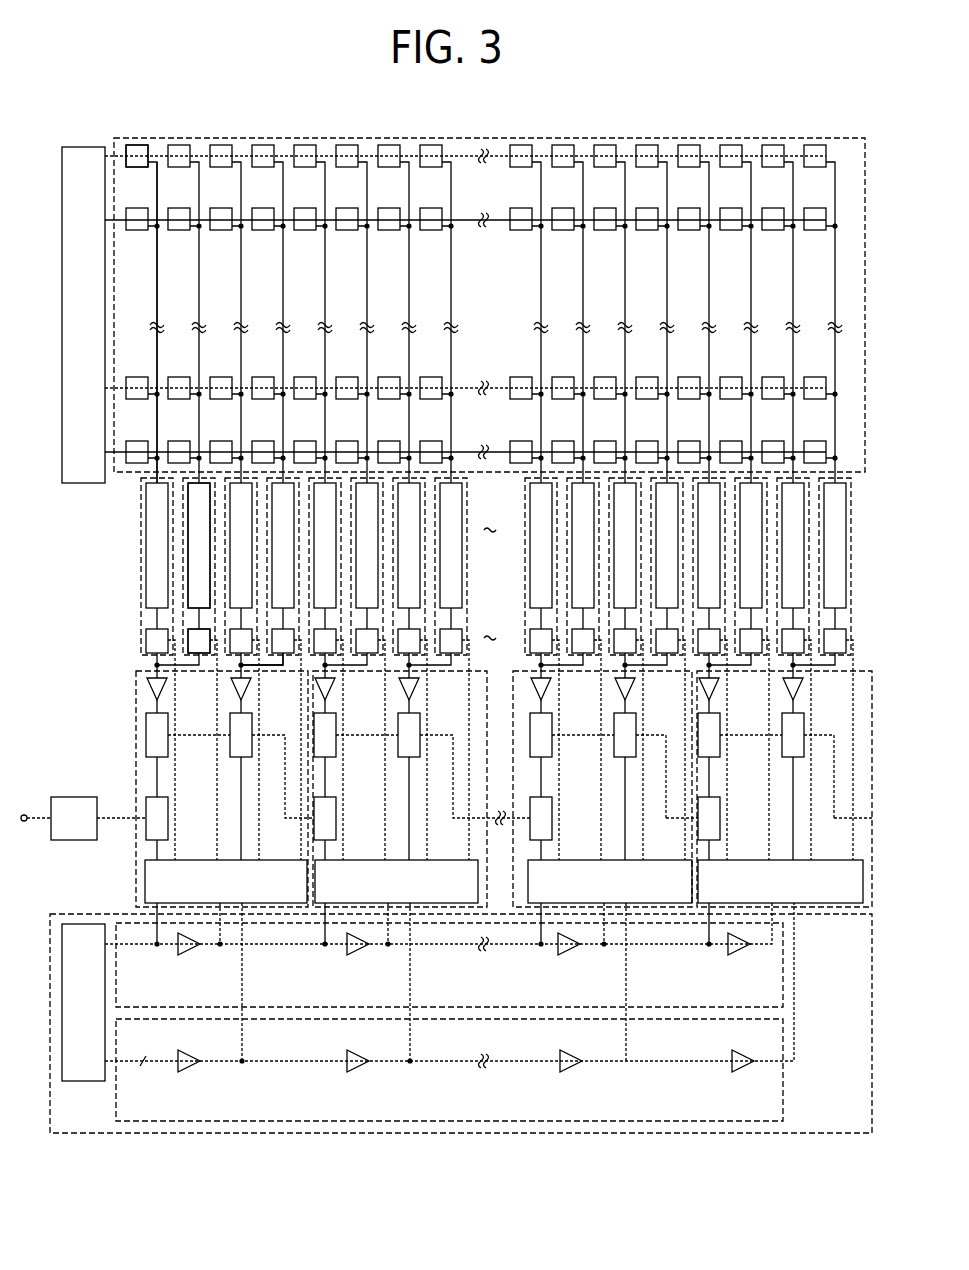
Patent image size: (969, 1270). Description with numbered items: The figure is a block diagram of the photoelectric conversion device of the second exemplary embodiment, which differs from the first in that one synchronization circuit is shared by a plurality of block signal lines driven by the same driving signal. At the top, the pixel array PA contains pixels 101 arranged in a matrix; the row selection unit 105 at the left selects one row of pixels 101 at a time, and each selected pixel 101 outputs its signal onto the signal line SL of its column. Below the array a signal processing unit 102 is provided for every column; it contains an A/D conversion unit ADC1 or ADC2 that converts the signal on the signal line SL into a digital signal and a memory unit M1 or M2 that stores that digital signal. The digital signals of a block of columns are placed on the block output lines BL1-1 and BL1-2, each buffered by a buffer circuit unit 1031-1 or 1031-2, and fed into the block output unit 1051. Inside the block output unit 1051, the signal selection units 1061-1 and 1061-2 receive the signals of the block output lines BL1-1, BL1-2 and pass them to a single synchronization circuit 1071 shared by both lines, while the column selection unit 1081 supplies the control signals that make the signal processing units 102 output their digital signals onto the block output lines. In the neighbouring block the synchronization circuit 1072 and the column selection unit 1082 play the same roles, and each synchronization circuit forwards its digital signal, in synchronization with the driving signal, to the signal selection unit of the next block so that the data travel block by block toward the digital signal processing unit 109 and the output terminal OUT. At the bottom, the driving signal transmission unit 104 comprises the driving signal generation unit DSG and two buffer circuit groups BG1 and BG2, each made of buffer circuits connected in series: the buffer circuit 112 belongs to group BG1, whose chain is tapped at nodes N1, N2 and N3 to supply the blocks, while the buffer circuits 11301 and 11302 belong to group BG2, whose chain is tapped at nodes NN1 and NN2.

The row selection unit 105 is at (85, 147).
The pixel 101 is at (137, 147).
The pixel array PA is at (220, 138).
The signal line SL is at (156, 288).
The signal processing unit 102 is at (142, 500).
The A/D conversion unit ADC1 is at (142, 540).
The A/D conversion unit ADC2 is at (188, 575).
The memory unit M1 is at (141, 645).
The memory unit M2 is at (188, 630).
The block output line BL1-1 is at (193, 665).
The block output line BL1-2 is at (278, 665).
The buffer circuit unit 1031-1 is at (147, 688).
The buffer circuit unit 1031-2 is at (240, 692).
The signal selection unit 1061-1 is at (146, 725).
The signal selection unit 1061-2 is at (247, 760).
The synchronization circuit 1071 is at (146, 806).
The synchronization circuit 1072 is at (336, 816).
The column selection unit 1081 is at (145, 894).
The column selection unit 1082 is at (455, 860).
The block output unit 1051 is at (134, 860).
The digital signal processing unit 109 is at (65, 797).
The output terminal OUT is at (26, 822).
The driving signal transmission unit 104 is at (770, 1133).
The driving signal generation unit DSG is at (82, 1081).
The buffer circuit group BG1 is at (783, 968).
The buffer circuit group BG2 is at (783, 1088).
The buffer circuit 112 is at (190, 955).
The node N1 is at (157, 948).
The node N2 is at (325, 948).
The node N3 is at (541, 948).
The buffer circuit 11301 is at (187, 1067).
The buffer circuit 11302 is at (357, 1067).
The node NN1 is at (243, 1065).
The node NN2 is at (412, 1063).